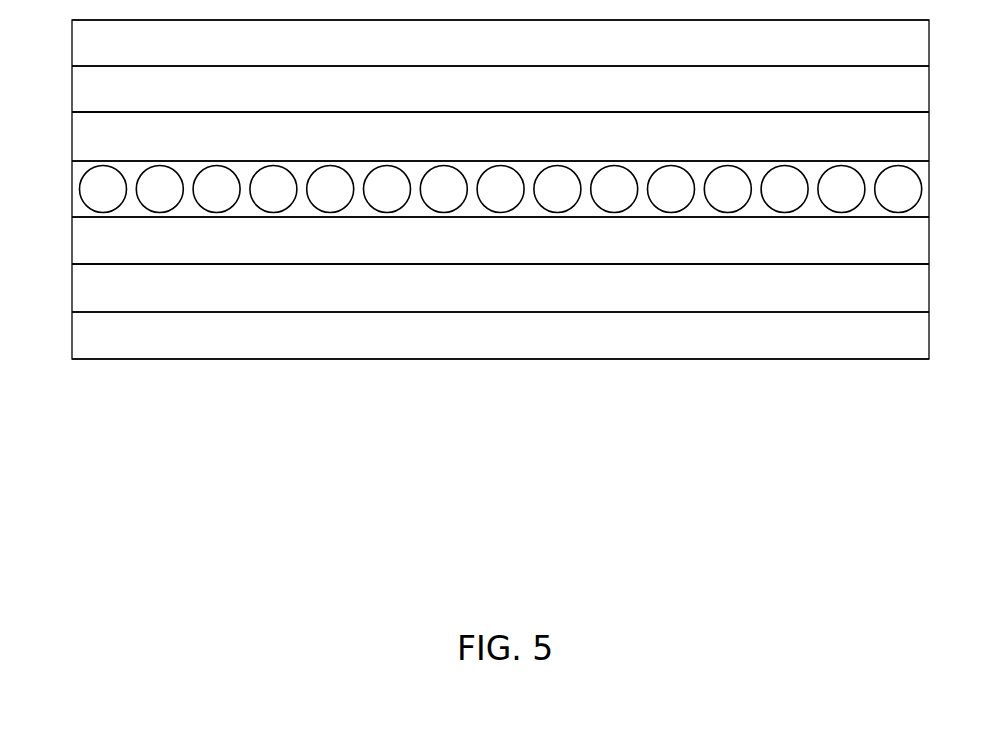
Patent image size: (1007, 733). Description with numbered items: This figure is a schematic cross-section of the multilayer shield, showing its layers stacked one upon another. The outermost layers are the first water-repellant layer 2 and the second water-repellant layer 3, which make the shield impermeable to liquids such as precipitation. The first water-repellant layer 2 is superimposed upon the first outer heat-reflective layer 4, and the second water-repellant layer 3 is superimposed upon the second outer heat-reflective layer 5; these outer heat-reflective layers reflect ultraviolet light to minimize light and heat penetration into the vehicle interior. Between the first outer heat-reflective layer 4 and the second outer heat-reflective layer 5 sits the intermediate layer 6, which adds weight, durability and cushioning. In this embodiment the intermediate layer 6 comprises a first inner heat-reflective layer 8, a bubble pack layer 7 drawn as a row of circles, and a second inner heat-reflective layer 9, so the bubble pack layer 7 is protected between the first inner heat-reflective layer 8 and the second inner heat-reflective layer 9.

The first water-repellant layer 2 is at (79, 330).
The second water-repellant layer 3 is at (79, 38).
The first outer heat-reflective layer 4 is at (79, 283).
The second outer heat-reflective layer 5 is at (79, 86).
The intermediate layer 6 is at (958, 112).
The bubble pack layer 7 is at (79, 185).
The first inner heat-reflective layer 8 is at (79, 236).
The second inner heat-reflective layer 9 is at (79, 133).